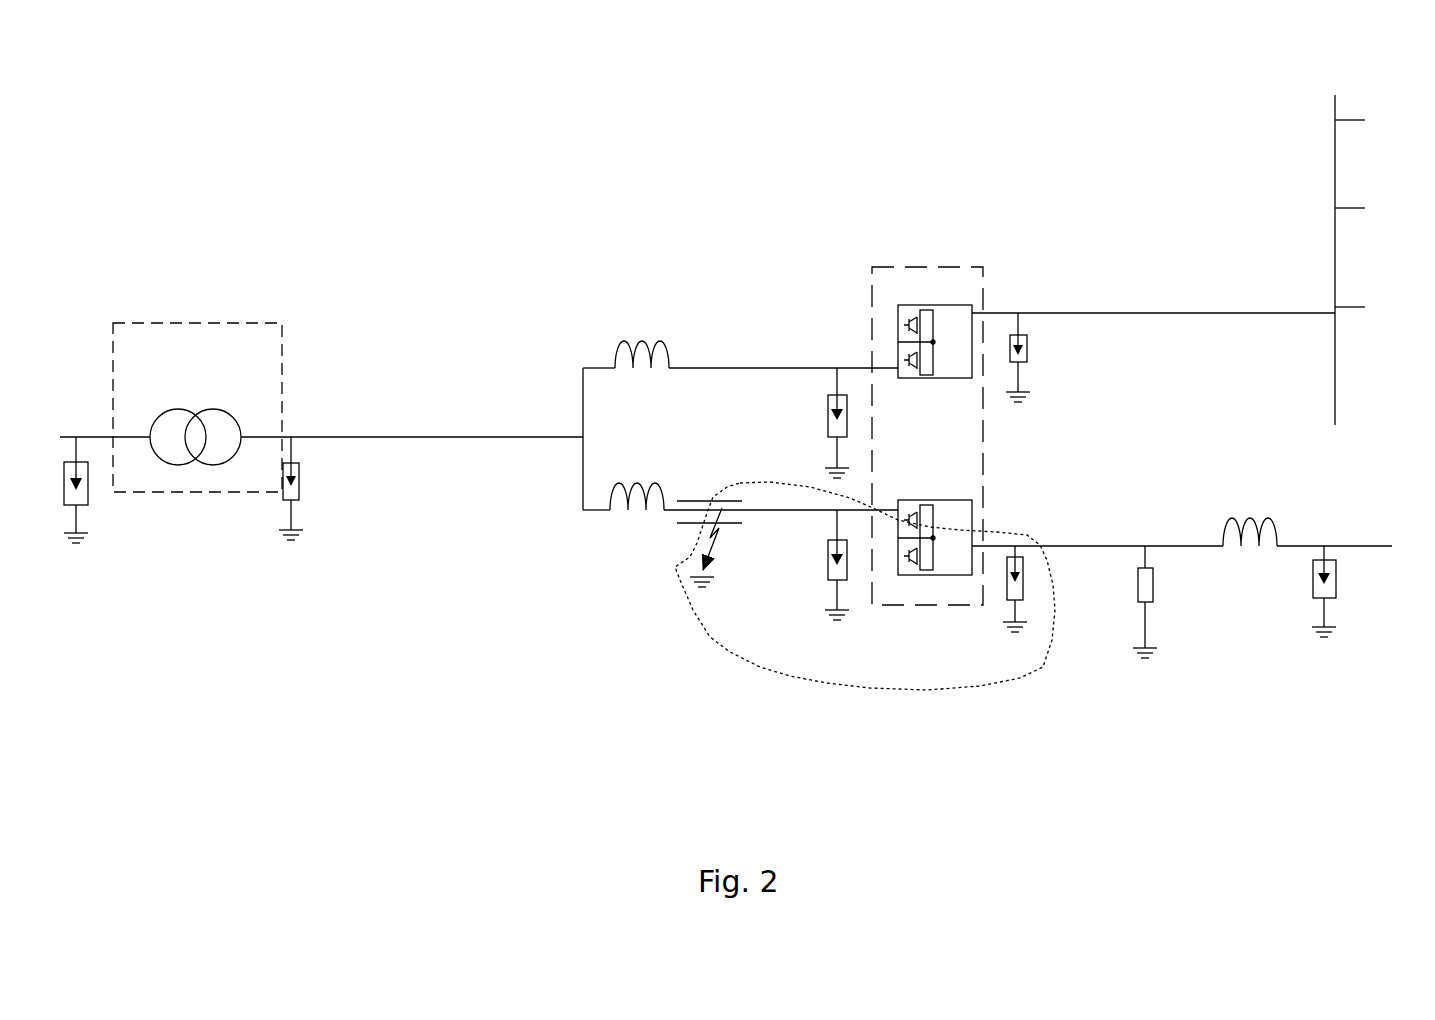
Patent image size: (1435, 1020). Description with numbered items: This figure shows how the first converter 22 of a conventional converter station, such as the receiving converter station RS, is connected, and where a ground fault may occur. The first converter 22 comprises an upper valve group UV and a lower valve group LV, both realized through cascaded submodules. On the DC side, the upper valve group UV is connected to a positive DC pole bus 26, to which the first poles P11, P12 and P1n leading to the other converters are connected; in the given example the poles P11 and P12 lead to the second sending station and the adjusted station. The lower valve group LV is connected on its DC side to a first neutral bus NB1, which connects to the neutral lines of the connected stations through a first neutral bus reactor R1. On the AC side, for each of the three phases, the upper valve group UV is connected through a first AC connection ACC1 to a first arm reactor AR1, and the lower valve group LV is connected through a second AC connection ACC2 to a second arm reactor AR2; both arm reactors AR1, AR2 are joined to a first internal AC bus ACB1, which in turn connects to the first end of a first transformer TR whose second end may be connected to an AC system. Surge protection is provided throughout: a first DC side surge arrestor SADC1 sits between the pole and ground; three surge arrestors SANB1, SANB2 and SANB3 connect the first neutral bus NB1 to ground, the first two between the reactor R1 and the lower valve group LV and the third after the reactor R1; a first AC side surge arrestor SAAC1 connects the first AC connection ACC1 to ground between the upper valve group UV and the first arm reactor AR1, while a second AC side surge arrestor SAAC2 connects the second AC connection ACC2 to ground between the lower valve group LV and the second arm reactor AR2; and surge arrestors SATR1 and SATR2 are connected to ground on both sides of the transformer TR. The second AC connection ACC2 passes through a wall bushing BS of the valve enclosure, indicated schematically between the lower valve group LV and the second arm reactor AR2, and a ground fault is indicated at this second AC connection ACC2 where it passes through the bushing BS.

The first transformer TR is at (187, 319).
The transformer surge arrestor SATR1 is at (113, 490).
The transformer surge arrestor SATR2 is at (327, 488).
The first internal AC bus ACB1 is at (419, 434).
The first arm reactor AR1 is at (644, 378).
The second arm reactor AR2 is at (637, 518).
The first AC connection ACC1 is at (684, 364).
The second AC connection ACC2 is at (758, 506).
The bushing BS is at (678, 524).
The first AC side surge arrestor SAAC1 is at (804, 423).
The second AC side surge arrestor SAAC2 is at (804, 565).
The receiving converter station RS is at (883, 129).
The first converter 22 is at (894, 264).
The upper valve group UV is at (1116, 329).
The lower valve group LV is at (935, 515).
The first DC side surge arrestor SADC1 is at (1066, 357).
The positive DC pole bus 26 is at (1334, 116).
The first pole P11 is at (1380, 116).
The first pole P12 is at (1380, 216).
The first pole P1n is at (1380, 306).
The first neutral bus NB1 is at (1186, 544).
The first neutral bus reactor R1 is at (1307, 515).
The first neutral bus surge arrestor SANB1 is at (1051, 589).
The second neutral bus surge arrestor SANB2 is at (1181, 602).
The third neutral bus surge arrestor SANB3 is at (1328, 622).